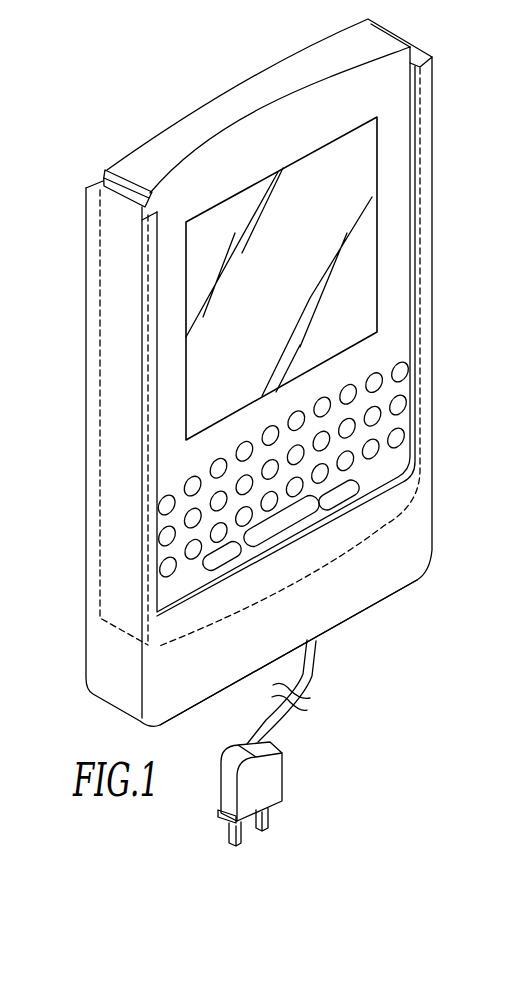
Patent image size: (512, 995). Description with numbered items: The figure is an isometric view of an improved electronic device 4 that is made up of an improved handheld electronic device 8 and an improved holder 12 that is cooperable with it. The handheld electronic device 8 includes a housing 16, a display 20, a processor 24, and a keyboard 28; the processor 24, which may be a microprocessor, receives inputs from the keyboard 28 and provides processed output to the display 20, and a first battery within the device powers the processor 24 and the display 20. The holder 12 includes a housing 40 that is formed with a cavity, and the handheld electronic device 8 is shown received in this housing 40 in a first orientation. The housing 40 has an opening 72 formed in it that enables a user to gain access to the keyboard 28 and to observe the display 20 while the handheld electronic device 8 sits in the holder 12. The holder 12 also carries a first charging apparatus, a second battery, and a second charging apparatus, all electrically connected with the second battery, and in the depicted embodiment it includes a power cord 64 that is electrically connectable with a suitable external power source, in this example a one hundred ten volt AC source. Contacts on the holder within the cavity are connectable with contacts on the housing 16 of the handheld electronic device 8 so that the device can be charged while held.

The electronic device 4 is at (277, 432).
The handheld electronic device 8 is at (247, 113).
The holder 12 is at (391, 626).
The housing 16 is at (240, 97).
The display 20 is at (327, 167).
The processor 24 is at (168, 137).
The keyboard 28 is at (408, 388).
The housing 40 is at (418, 518).
The power cord 64 is at (312, 661).
The opening 72 is at (413, 145).